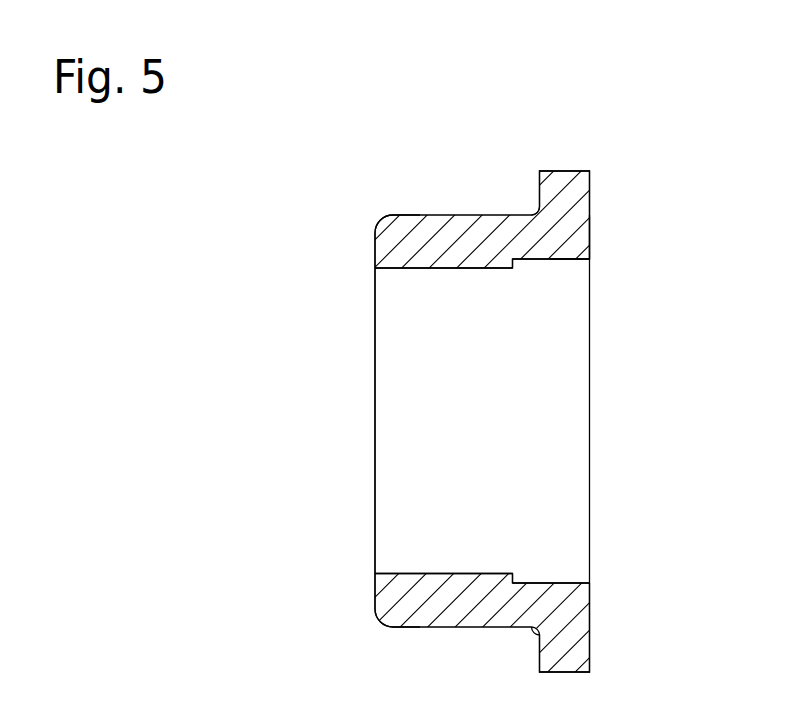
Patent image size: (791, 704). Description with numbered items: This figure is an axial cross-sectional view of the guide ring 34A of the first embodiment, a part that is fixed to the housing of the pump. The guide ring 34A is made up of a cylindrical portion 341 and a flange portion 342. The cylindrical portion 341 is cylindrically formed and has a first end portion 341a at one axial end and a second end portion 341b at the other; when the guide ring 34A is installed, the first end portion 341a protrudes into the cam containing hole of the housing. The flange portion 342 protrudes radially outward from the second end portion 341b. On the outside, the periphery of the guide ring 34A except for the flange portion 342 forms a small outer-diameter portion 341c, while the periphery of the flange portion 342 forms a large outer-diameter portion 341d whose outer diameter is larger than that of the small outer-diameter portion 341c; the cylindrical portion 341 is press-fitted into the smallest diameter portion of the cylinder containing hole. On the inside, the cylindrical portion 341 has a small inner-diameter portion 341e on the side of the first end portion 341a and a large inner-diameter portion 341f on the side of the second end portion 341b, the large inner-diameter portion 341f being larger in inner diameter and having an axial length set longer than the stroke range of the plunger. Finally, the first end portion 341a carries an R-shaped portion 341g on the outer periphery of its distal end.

The guide ring 34A is at (591, 181).
The cylindrical portion 341 is at (455, 227).
The first end portion 341a is at (386, 257).
The second end portion 341b is at (575, 245).
The small outer-diameter portion 341c is at (417, 214).
The large outer-diameter portion 341d is at (568, 673).
The small inner-diameter portion 341e is at (405, 418).
The large inner-diameter portion 341f is at (560, 418).
The R-shaped portion 341g is at (378, 620).
The flange portion 342 is at (562, 177).